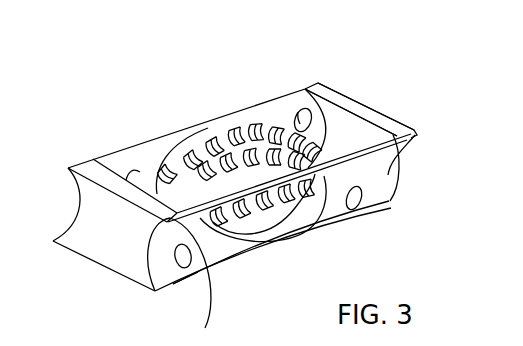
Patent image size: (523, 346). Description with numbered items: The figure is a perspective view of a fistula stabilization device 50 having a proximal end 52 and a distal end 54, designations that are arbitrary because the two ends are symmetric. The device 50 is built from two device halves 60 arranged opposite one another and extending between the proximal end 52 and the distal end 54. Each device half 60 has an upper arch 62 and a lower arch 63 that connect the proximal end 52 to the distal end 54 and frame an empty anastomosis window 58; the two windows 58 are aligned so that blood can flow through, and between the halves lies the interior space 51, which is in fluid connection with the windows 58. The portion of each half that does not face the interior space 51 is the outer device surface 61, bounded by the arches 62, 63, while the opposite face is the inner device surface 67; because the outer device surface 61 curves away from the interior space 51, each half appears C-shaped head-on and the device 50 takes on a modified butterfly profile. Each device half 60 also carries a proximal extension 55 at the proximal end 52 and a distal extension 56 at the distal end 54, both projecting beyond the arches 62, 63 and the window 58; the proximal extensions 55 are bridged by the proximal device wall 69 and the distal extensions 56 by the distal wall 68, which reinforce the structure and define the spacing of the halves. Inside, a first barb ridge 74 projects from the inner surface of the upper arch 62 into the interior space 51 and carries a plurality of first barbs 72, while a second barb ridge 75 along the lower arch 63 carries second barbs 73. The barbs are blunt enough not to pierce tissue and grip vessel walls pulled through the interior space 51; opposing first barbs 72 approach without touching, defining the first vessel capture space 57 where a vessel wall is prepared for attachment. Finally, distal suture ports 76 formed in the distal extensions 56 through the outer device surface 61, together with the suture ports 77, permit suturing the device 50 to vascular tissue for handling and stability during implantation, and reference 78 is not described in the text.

The device 50 is at (204, 62).
The interior space 51 is at (168, 172).
The proximal end 52 is at (394, 157).
The distal end 54 is at (123, 273).
The proximal extension 55 is at (302, 72).
The distal extension 56 is at (57, 209).
The first vessel capture space 57 is at (238, 118).
The anastomosis window 58 is at (272, 219).
The device half 60 is at (92, 148).
The outer device surface 61 is at (318, 209).
The upper arch 62 is at (282, 80).
The lower arch 63 is at (386, 198).
The inner device surface 67 is at (264, 100).
The distal wall 68 is at (78, 231).
The proximal device wall 69 is at (354, 118).
The first barbs 72 is at (196, 140).
The second barbs 73 is at (236, 211).
The first barb ridge 74 is at (210, 107).
The second barb ridge 75 is at (290, 201).
The distal suture ports 76 is at (178, 257).
The suture ports 77 is at (383, 186).
The lower aperture 78 is at (218, 250).